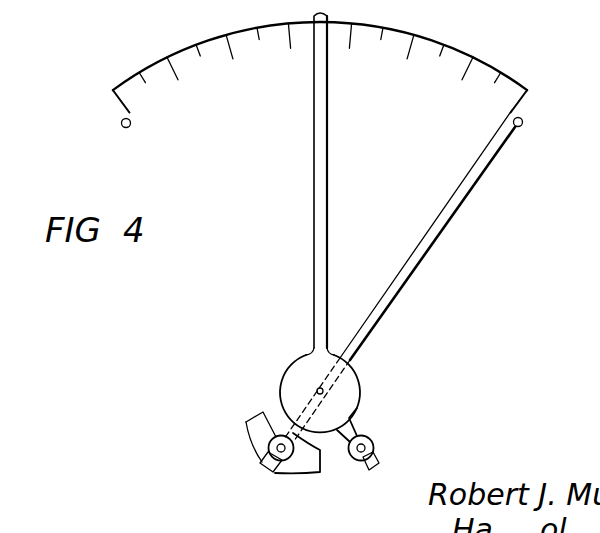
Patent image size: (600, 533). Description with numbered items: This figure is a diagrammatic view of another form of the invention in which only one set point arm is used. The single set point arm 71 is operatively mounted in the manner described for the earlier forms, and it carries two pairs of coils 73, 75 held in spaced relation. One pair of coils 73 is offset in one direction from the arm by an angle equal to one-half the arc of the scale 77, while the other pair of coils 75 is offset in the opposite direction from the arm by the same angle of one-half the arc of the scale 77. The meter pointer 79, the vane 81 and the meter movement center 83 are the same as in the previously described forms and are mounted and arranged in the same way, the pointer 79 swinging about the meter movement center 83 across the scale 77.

The set point arm 71 is at (329, 197).
The pair of coils 73 is at (282, 461).
The pair of coils 75 is at (370, 437).
The scale 77 is at (481, 60).
The meter pointer 79 is at (437, 233).
The vane 81 is at (318, 472).
The meter movement center 83 is at (323, 390).